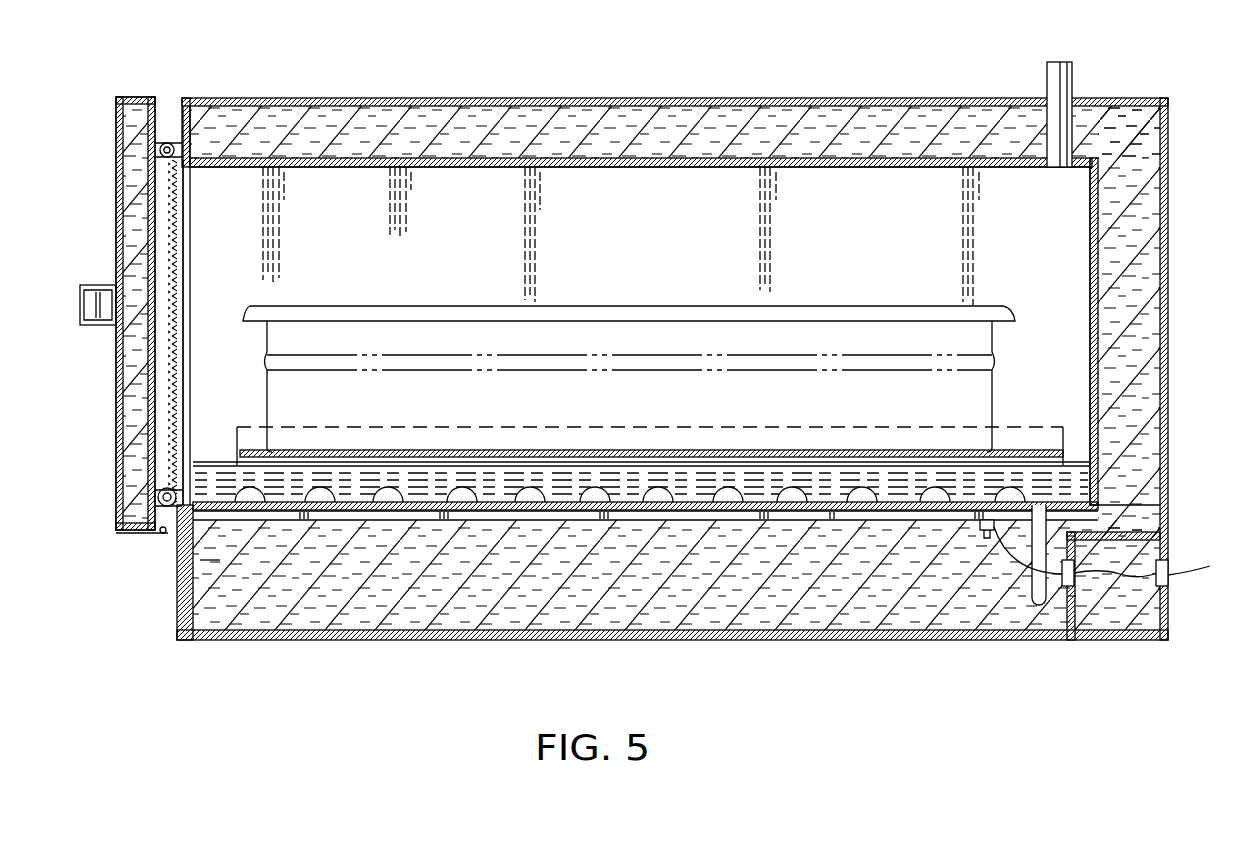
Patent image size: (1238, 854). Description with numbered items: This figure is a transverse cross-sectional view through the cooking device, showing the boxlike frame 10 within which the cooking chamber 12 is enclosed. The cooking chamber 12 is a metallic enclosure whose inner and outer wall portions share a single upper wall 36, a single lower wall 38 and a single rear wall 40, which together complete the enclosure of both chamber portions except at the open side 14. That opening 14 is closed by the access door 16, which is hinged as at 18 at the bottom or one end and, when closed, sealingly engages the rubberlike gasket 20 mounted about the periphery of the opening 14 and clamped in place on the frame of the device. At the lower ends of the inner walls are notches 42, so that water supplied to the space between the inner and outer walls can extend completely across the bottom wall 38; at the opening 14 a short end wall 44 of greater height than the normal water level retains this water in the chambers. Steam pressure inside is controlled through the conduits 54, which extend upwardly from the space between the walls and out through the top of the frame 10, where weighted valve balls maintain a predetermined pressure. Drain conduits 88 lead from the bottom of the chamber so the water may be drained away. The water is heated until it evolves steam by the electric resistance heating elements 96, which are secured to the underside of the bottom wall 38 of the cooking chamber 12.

The boxlike frame 10 is at (478, 98).
The cooking chamber 12 is at (722, 194).
The opening 14 is at (197, 268).
The access door 16 is at (116, 210).
The hinge 18 is at (160, 534).
The rubberlike gasket 20 is at (167, 142).
The upper wall 36 is at (612, 168).
The lower wall 38 is at (712, 506).
The rear wall 40 is at (1093, 280).
The notches 42 is at (595, 492).
The short end wall 44 is at (200, 468).
The conduits 54 is at (1073, 82).
The drain conduits 88 is at (1038, 606).
The electric resistance heating elements 96 is at (415, 525).